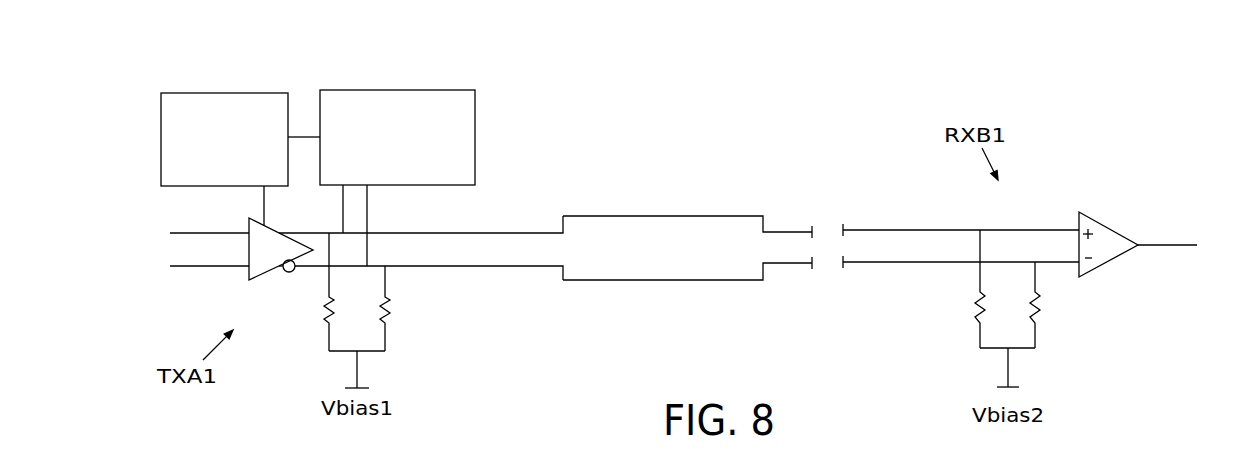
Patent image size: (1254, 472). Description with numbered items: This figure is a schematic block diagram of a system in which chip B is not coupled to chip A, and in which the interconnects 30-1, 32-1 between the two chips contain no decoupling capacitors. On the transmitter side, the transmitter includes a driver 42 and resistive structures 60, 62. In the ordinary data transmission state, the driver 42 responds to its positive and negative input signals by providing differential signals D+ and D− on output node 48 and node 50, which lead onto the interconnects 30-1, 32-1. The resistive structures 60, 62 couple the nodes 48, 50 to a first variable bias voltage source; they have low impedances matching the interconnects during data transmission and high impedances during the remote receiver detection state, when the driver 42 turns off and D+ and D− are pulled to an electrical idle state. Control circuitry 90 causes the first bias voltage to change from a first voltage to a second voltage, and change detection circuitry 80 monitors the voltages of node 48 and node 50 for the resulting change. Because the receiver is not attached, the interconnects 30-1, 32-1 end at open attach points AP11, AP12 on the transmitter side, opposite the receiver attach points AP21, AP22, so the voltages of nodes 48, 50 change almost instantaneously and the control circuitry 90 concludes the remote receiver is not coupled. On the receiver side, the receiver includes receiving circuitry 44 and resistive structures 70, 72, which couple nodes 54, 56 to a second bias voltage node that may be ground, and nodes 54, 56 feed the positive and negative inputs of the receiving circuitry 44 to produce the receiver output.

The interconnect 30-1 is at (665, 160).
The interconnect 32-1 is at (658, 325).
The driver 42 is at (266, 272).
The receiving circuitry 44 is at (1102, 223).
The output node 48 is at (398, 233).
The node 50 is at (400, 266).
The node 54 is at (905, 230).
The node 56 is at (905, 262).
The resistive structure 60 is at (325, 321).
The resistive structure 62 is at (390, 323).
The resistive structure 70 is at (975, 320).
The resistive structure 72 is at (1040, 320).
The change detection circuitry 80 is at (477, 137).
The control circuitry 90 is at (238, 169).
The attach point AP11 is at (804, 209).
The attach point AP12 is at (804, 287).
The attach point AP21 is at (850, 209).
The attach point AP22 is at (849, 287).